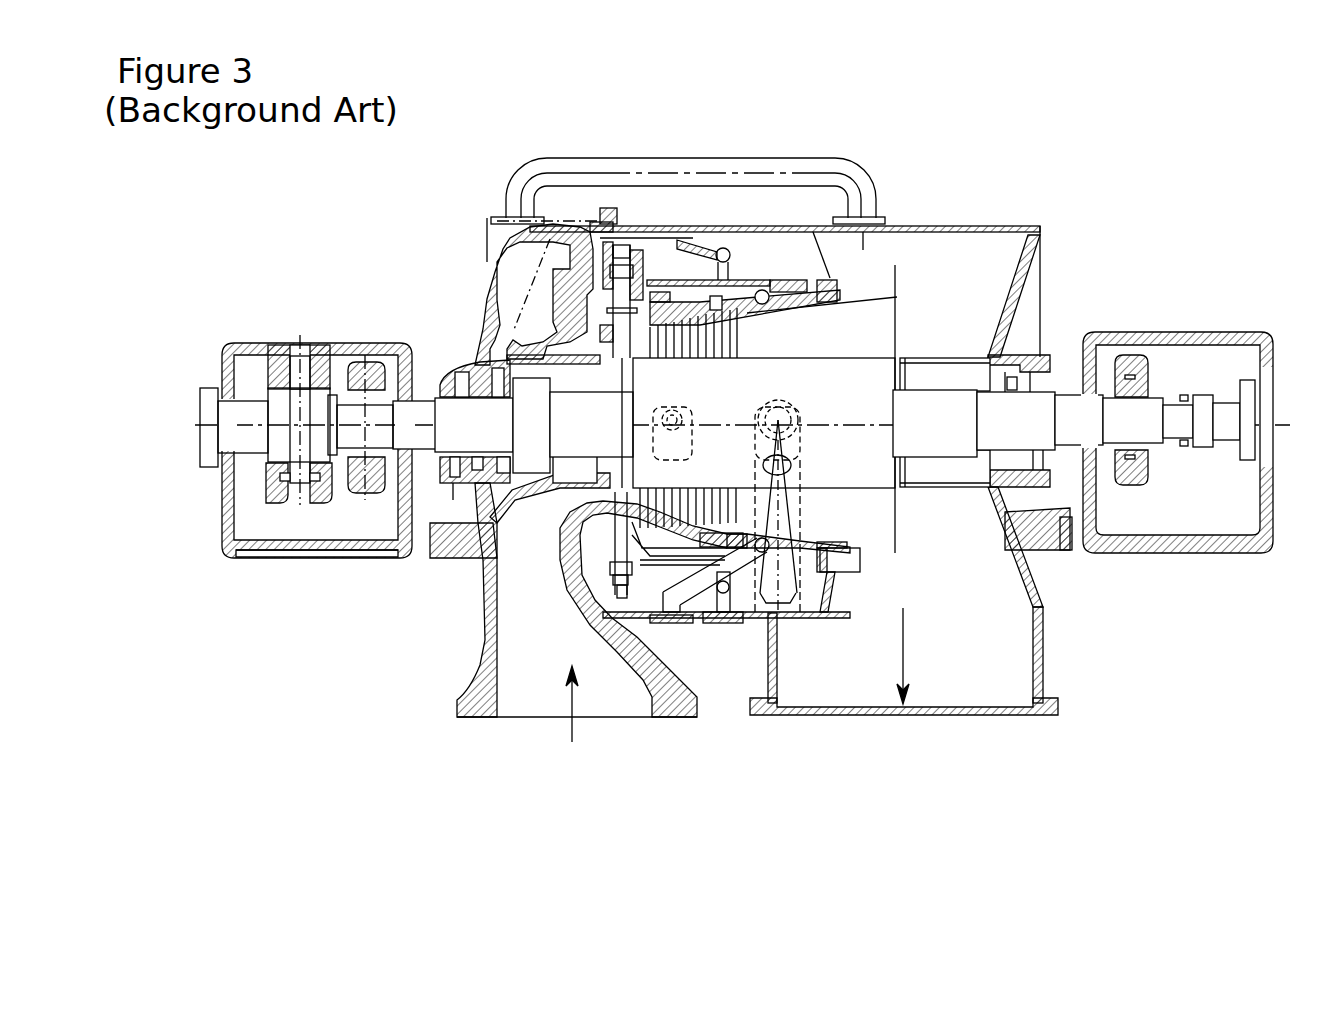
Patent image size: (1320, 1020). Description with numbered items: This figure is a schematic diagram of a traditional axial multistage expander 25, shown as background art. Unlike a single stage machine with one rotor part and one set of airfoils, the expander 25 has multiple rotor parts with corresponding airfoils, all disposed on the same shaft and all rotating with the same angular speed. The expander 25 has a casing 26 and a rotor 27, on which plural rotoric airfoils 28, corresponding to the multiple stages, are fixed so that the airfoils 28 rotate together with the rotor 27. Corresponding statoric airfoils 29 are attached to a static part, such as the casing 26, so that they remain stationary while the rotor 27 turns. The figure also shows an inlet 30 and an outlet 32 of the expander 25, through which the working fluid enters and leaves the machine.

The axial multistage expander 25 is at (708, 89).
The casing 26 is at (467, 543).
The rotor 27 is at (868, 383).
The rotoric airfoils 28 is at (740, 308).
The statoric airfoils 29 is at (660, 357).
The inlet 30 is at (523, 677).
The outlet 32 is at (973, 670).